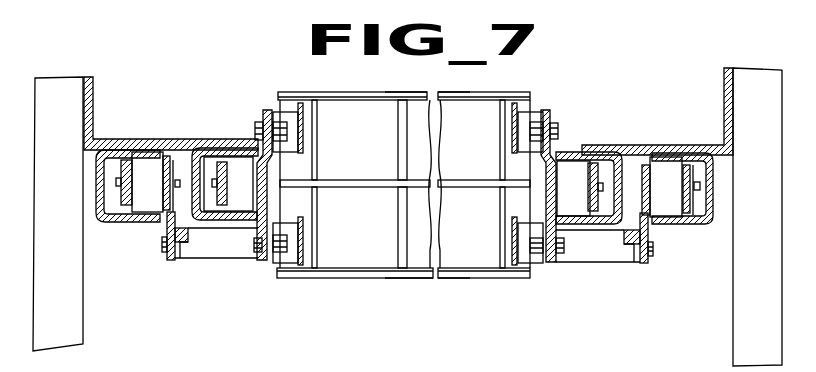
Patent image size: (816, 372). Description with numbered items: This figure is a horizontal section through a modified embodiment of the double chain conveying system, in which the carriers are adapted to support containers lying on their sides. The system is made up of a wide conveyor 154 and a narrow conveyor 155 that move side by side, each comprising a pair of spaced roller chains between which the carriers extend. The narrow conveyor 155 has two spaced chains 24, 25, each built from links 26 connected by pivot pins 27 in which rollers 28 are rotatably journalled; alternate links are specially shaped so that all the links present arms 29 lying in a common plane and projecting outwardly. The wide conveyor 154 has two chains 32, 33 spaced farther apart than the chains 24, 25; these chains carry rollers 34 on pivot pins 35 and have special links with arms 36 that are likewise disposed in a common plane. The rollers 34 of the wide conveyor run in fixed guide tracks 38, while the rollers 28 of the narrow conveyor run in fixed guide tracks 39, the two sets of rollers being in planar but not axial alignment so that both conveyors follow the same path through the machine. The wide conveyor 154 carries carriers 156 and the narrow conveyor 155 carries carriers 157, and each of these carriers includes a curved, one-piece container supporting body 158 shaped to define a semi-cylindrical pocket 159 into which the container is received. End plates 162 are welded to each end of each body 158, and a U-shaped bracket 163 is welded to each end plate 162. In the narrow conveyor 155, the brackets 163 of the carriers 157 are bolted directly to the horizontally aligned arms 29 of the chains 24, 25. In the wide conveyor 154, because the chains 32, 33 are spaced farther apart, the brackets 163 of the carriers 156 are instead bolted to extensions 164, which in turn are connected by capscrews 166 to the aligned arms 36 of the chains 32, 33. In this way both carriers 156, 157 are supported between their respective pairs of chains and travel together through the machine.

The chain 24 is at (215, 164).
The chain 25 is at (598, 173).
The link 26 is at (258, 200).
The pivot pin 27 is at (553, 193).
The roller 28 is at (239, 161).
The arm 29 is at (262, 110).
The chain 32 is at (129, 165).
The chain 33 is at (690, 172).
The roller 34 is at (143, 163).
The pivot pin 35 is at (117, 182).
The arm 36 is at (167, 228).
The guide track 38 is at (97, 195).
The guide track 39 is at (195, 167).
The wide conveyor 154 is at (466, 279).
The narrow conveyor 155 is at (313, 92).
The carrier 156 is at (327, 275).
The carrier 157 is at (505, 92).
The container supporting body 158 is at (467, 98).
The semi-cylindrical pocket 159 is at (302, 197).
The end plate 162 is at (303, 119).
The U-shaped bracket 163 is at (284, 140).
The extension 164 is at (200, 248).
The capscrew 166 is at (162, 243).